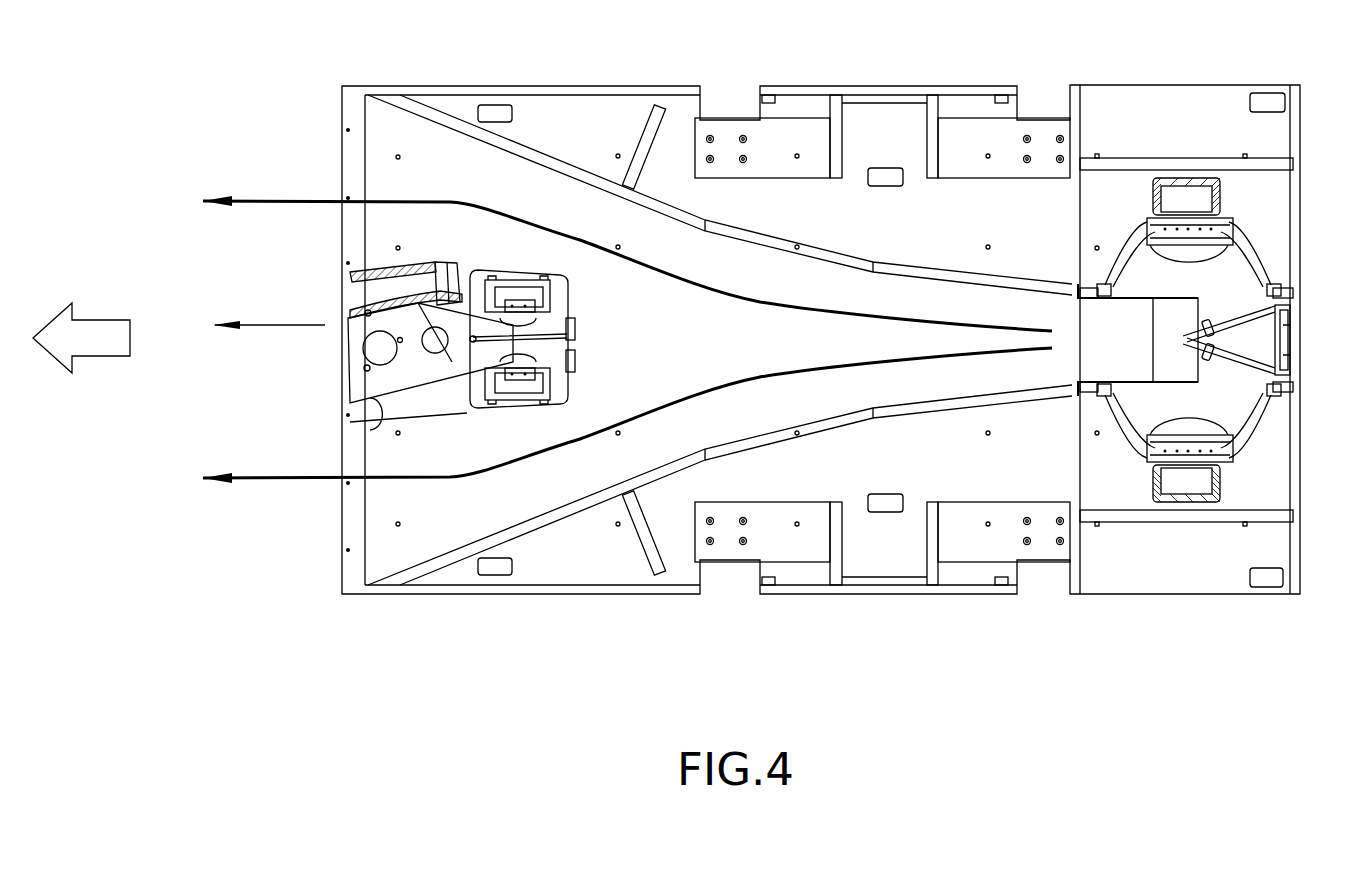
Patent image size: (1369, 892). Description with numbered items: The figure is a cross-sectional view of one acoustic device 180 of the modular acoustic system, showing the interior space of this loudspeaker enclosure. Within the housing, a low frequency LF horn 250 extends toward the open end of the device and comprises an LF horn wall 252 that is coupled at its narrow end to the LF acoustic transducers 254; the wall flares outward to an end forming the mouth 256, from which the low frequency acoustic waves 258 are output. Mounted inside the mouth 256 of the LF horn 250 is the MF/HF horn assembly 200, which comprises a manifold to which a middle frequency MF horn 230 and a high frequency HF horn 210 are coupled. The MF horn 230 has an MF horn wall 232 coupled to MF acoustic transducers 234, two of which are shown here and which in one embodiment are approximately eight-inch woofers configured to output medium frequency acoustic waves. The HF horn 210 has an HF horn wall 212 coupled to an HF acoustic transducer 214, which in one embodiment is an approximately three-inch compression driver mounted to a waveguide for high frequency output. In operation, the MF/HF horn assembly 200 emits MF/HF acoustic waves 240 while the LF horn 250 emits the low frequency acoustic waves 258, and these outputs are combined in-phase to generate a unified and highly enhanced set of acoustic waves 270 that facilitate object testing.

The acoustic device 180 is at (763, 615).
The MF/HF horn assembly 200 is at (420, 436).
The HF horn 210 is at (350, 228).
The HF horn wall 212 is at (385, 273).
The HF acoustic transducer 214 is at (437, 260).
The MF horn 230 is at (546, 395).
The MF horn wall 232 is at (370, 430).
The MF acoustic transducer 234 is at (548, 287).
The MF/HF acoustic waves 240 is at (285, 335).
The LF horn 250 is at (1017, 416).
The LF horn wall 252 is at (773, 229).
The LF acoustic transducer 254 is at (1262, 254).
The mouth 256 is at (345, 238).
The low frequency acoustic waves 258 is at (256, 201).
The acoustic waves 270 is at (90, 355).